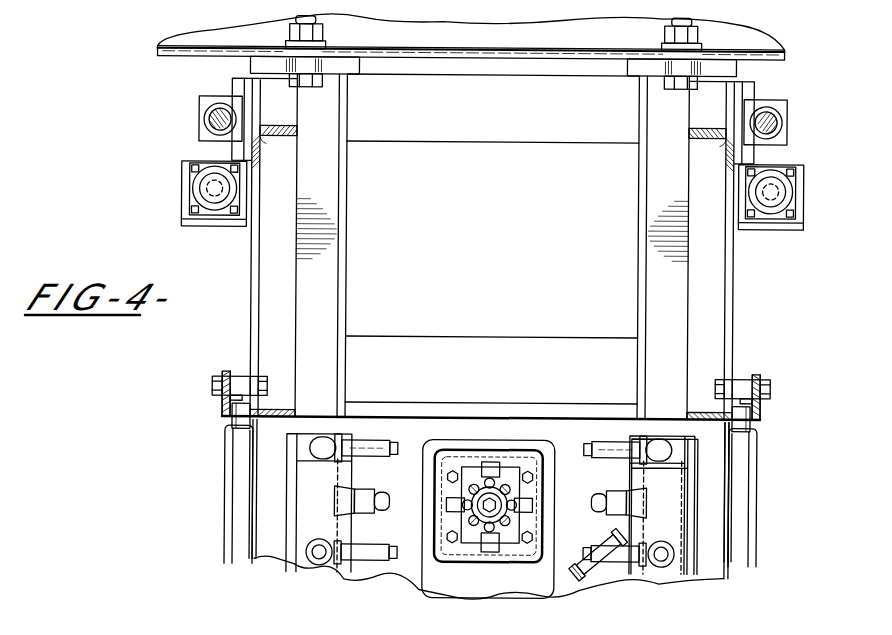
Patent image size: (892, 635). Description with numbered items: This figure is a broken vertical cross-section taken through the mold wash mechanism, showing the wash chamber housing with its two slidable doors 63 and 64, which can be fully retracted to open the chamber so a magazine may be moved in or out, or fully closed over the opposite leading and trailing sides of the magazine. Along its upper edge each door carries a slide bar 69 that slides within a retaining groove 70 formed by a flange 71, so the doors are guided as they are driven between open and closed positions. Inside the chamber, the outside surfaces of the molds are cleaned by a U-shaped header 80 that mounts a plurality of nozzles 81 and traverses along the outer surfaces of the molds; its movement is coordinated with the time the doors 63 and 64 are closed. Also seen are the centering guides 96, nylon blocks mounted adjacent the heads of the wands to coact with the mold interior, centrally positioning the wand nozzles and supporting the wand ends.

The door 63 is at (757, 563).
The door 64 is at (232, 541).
The slide bar 69 is at (245, 415).
The retaining groove 70 is at (250, 377).
The flange 71 is at (222, 400).
The U-shaped header 80 is at (680, 527).
The nozzles 81 is at (575, 567).
The centering guides 96 is at (535, 507).